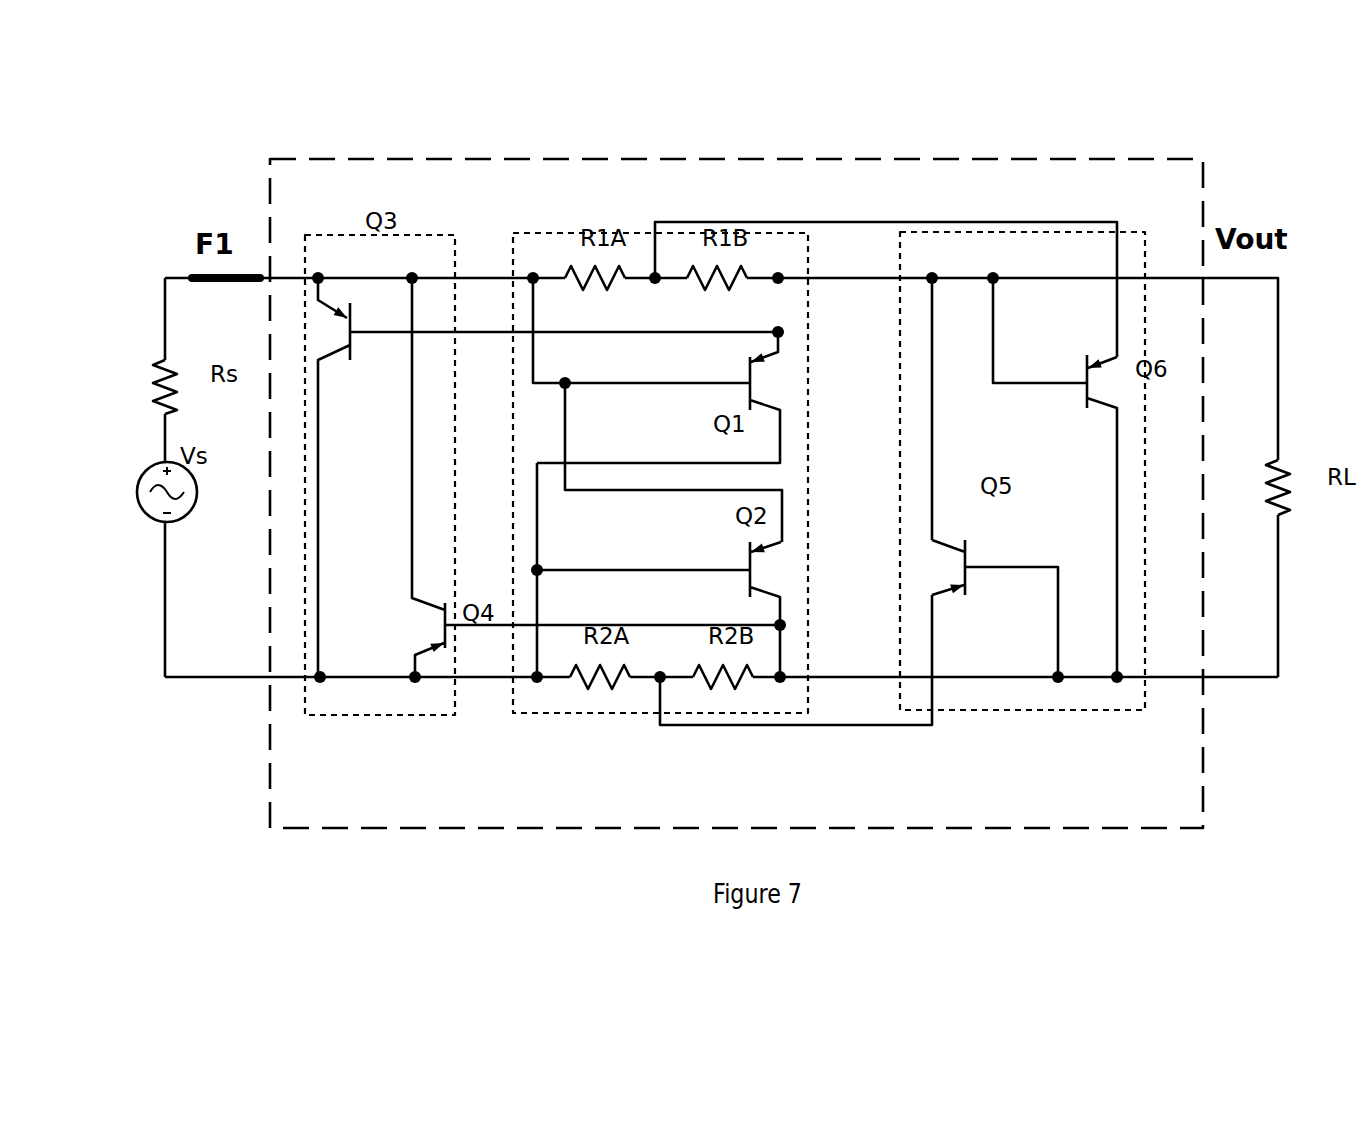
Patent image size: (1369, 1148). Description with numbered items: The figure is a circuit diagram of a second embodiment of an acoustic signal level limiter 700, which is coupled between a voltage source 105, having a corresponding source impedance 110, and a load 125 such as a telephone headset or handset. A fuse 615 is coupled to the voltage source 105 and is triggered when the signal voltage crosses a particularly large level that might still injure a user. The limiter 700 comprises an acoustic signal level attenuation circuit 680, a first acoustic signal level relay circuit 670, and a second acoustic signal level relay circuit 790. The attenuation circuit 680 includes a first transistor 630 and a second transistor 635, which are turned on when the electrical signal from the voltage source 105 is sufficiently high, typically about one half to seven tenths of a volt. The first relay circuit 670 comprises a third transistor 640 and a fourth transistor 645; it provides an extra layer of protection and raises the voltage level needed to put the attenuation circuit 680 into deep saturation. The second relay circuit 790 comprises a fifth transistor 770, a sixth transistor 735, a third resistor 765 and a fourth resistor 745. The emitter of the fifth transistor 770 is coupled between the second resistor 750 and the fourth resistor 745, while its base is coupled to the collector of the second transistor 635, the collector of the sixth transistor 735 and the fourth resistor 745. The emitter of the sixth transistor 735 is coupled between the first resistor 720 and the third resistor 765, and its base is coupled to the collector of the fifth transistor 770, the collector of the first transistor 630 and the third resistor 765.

The acoustic signal level limiter 700 is at (495, 158).
The fuse 615 is at (190, 276).
The source impedance 110 is at (152, 384).
The voltage source 105 is at (136, 490).
The first acoustic signal level relay circuit 670 is at (407, 235).
The third transistor 640 is at (351, 318).
The fourth transistor 645 is at (448, 614).
The first resistor 720 is at (567, 270).
The acoustic signal level attenuation circuit 680 is at (555, 233).
The third resistor 765 is at (750, 270).
The first transistor 630 is at (745, 373).
The second transistor 635 is at (745, 553).
The second resistor 750 is at (605, 667).
The fourth resistor 745 is at (725, 667).
The second acoustic signal level relay circuit 790 is at (1125, 232).
The sixth transistor 735 is at (1083, 369).
The fifth transistor 770 is at (970, 546).
The load 125 is at (1272, 479).